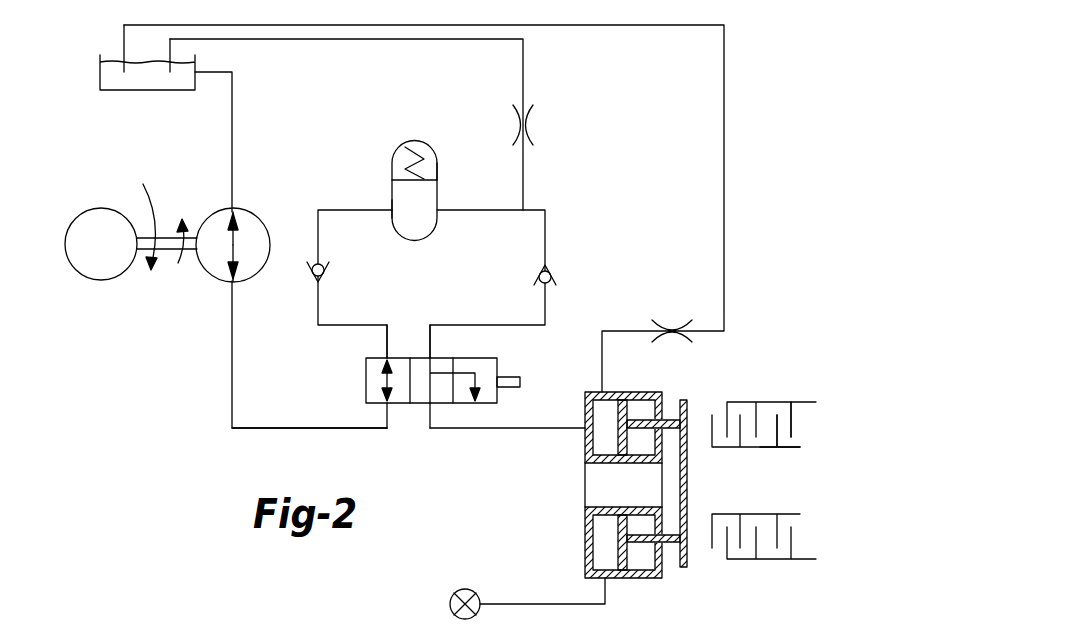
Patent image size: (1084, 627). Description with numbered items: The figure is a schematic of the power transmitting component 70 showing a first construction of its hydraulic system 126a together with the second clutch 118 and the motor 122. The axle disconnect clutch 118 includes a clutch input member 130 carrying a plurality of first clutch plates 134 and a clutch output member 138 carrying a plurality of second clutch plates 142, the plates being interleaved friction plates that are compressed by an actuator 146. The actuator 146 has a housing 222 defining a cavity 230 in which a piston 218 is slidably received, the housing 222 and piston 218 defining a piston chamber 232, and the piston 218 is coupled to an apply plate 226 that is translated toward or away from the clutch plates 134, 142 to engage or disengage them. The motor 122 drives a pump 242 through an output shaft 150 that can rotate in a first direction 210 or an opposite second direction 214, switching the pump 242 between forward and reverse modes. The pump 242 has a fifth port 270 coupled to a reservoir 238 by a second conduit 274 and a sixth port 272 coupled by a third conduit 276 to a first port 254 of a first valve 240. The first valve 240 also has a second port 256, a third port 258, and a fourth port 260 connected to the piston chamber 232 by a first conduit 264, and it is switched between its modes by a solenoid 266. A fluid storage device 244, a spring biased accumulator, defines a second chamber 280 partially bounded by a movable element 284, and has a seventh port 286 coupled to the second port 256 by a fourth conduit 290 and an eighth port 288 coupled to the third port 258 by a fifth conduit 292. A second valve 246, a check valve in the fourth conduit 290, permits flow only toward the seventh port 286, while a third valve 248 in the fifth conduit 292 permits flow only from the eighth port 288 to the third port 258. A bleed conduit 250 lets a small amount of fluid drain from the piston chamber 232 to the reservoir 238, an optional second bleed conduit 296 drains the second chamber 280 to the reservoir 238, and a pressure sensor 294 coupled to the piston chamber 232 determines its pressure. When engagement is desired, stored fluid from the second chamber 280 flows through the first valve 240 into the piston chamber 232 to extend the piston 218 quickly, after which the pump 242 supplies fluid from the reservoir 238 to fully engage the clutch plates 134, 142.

The power transmitting component 70 is at (792, 125).
The second clutch 118 is at (773, 392).
The motor 122 is at (70, 268).
The hydraulic system 126a is at (210, 439).
The clutch input member 130 is at (805, 402).
The first clutch plates 134 is at (793, 423).
The clutch output member 138 is at (782, 448).
The second clutch plates 142 is at (773, 428).
The actuator 146 is at (568, 537).
The output shaft 150 is at (168, 250).
The first direction 210 is at (142, 214).
The second direction 214 is at (188, 214).
The piston 218 is at (618, 548).
The housing 222 is at (585, 513).
The apply plate 226 is at (688, 415).
The cavity 230 is at (640, 398).
The piston chamber 232 is at (607, 440).
The reservoir 238 is at (100, 72).
The first valve 240 is at (366, 382).
The pump 242 is at (205, 268).
The fluid storage device 244 is at (396, 140).
The second valve 246 is at (330, 271).
The third valve 248 is at (538, 278).
The bleed conduit 250 is at (724, 135).
The first port 254 is at (388, 405).
The second port 256 is at (384, 358).
The third port 258 is at (432, 357).
The fourth port 260 is at (430, 406).
The first conduit 264 is at (512, 432).
The solenoid 266 is at (522, 383).
The fifth port 270 is at (234, 208).
The sixth port 272 is at (236, 282).
The second conduit 274 is at (234, 106).
The third conduit 276 is at (232, 392).
The second chamber 280 is at (400, 187).
The movable element 284 is at (432, 172).
The seventh port 286 is at (392, 210).
The eighth port 288 is at (440, 205).
The fourth conduit 290 is at (318, 225).
The fifth conduit 292 is at (545, 225).
The pressure sensor 294 is at (450, 597).
The second bleed conduit 296 is at (525, 78).